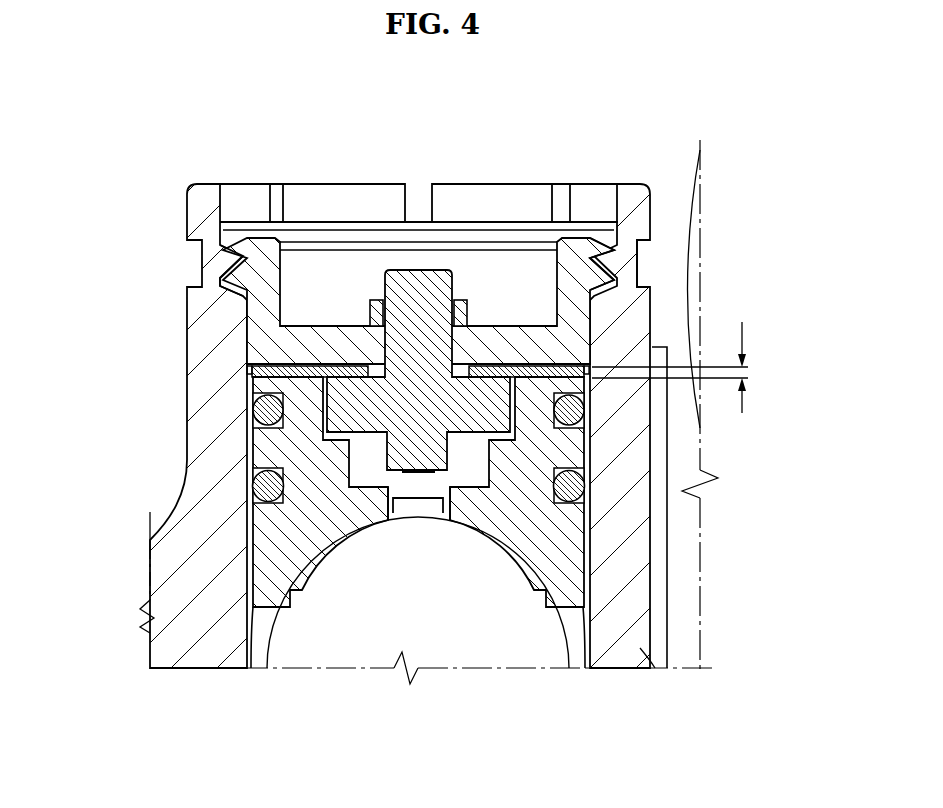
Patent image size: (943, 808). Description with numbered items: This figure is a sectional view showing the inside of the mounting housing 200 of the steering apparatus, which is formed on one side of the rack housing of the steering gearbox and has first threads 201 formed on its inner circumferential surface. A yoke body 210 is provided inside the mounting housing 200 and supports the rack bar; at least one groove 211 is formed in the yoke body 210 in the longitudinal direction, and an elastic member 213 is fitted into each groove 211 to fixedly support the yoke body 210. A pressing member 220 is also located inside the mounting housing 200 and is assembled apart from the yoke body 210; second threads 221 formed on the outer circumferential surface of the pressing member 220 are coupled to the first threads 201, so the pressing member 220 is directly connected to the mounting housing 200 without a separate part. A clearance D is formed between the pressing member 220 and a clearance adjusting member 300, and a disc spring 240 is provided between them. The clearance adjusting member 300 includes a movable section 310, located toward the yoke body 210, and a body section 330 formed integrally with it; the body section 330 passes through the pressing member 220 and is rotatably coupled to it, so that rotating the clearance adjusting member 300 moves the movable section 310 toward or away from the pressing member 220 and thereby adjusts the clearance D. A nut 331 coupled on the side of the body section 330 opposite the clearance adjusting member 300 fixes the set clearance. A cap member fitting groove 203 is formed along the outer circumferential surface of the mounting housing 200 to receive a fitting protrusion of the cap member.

The mounting housing 200 is at (180, 577).
The first threads 201 is at (233, 269).
The cap member fitting groove 203 is at (642, 270).
The yoke body 210 is at (552, 558).
The groove 211 is at (267, 417).
The elastic member 213 is at (267, 485).
The pressing member 220 is at (350, 348).
The second threads 221 is at (583, 270).
The disc spring 240 is at (250, 366).
The clearance adjusting member 300 is at (461, 458).
The movable section 310 is at (370, 427).
The body section 330 is at (405, 286).
The nut 331 is at (460, 312).
The clearance D is at (684, 367).